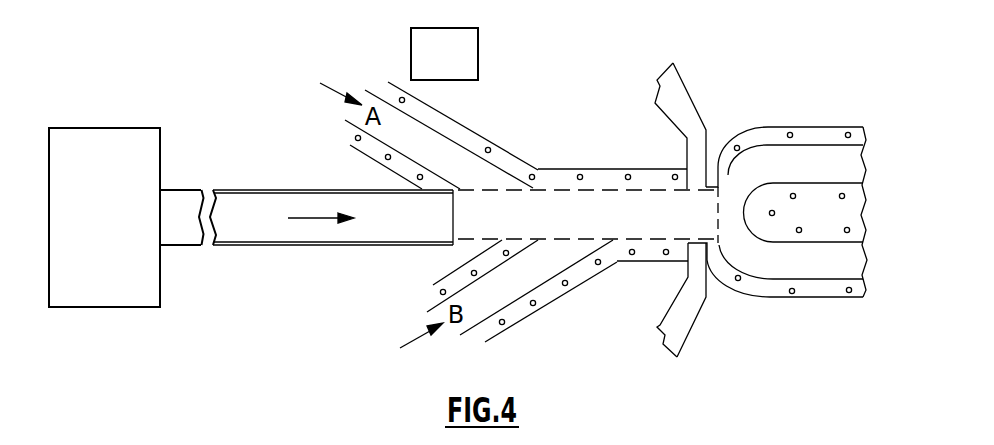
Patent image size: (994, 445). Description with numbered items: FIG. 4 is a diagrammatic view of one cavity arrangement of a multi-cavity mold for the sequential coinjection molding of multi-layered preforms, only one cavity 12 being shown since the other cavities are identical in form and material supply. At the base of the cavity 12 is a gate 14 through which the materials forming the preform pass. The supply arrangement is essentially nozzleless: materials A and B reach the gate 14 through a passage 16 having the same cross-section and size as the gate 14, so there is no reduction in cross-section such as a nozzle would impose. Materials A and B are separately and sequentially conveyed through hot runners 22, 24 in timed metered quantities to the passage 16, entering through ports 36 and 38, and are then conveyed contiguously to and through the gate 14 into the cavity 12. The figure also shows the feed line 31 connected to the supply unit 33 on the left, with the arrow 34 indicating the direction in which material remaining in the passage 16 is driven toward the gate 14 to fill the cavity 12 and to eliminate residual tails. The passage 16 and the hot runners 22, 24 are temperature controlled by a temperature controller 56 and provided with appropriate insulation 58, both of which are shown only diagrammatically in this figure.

The cavity 12 is at (803, 145).
The gate 14 is at (718, 198).
The passage 16 is at (619, 224).
The hot runner 22 is at (462, 142).
The hot runner 24 is at (535, 292).
The supply pipe 31 is at (238, 202).
The fluid source 33 is at (90, 234).
The arrow 34 is at (320, 219).
The port 36 is at (518, 170).
The port 38 is at (584, 240).
The temperature controller 56 is at (445, 125).
The insulation 58 is at (502, 155).